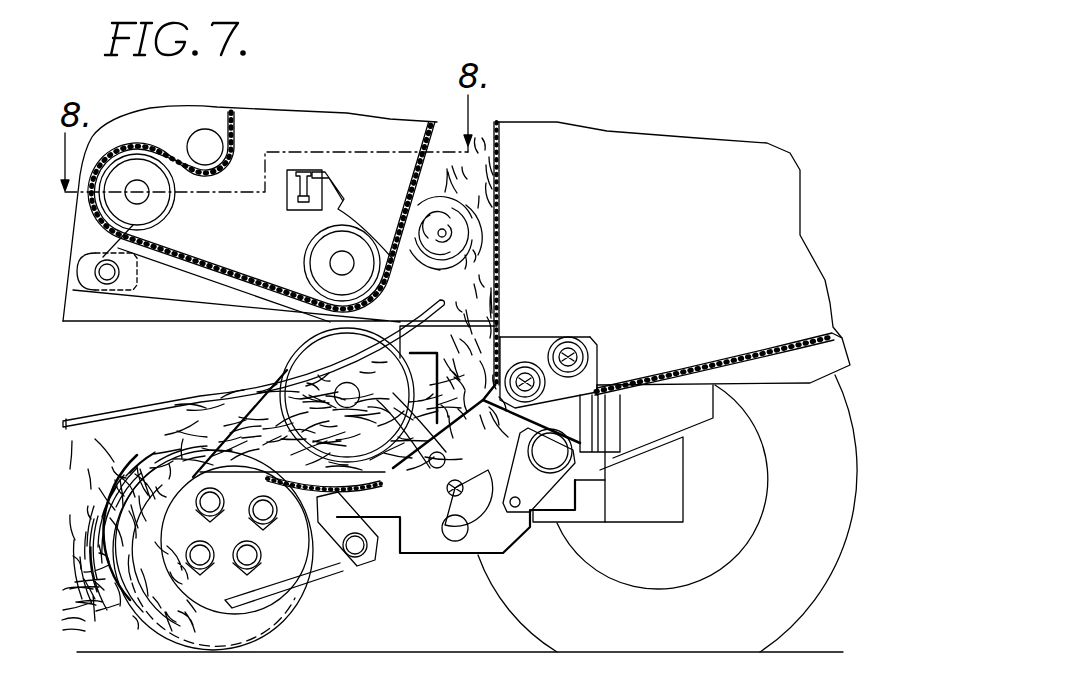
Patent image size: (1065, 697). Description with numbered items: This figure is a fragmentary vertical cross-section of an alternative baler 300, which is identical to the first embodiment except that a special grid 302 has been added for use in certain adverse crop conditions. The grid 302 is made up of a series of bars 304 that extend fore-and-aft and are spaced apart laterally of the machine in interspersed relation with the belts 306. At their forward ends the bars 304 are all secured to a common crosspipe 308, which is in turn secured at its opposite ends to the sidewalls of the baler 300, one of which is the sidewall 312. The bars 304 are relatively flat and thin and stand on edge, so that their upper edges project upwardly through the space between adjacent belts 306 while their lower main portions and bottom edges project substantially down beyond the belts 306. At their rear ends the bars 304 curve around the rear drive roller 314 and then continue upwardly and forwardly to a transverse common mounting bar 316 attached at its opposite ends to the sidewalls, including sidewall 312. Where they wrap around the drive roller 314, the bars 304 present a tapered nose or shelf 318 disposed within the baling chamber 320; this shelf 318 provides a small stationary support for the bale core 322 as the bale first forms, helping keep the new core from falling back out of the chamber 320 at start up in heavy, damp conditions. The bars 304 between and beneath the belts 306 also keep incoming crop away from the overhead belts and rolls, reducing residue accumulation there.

The baler 300 is at (705, 122).
The grid 302 is at (168, 312).
The bars 304 is at (208, 283).
The belts 306 is at (250, 283).
The crosspipe 308 is at (100, 285).
The sidewall 312 is at (268, 118).
The rear drive roller 314 is at (328, 250).
The mounting bar 316 is at (320, 178).
The shelf 318 is at (458, 291).
The baling chamber 320 is at (445, 165).
The bale core 322 is at (450, 213).